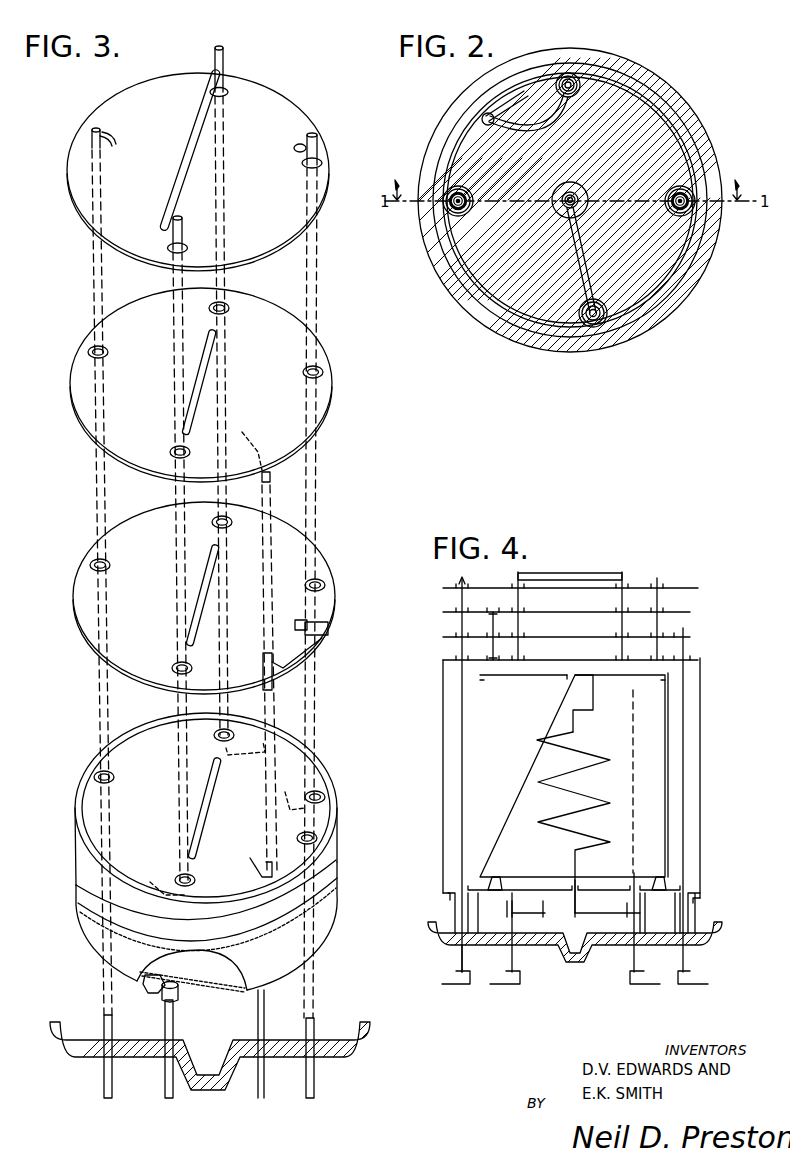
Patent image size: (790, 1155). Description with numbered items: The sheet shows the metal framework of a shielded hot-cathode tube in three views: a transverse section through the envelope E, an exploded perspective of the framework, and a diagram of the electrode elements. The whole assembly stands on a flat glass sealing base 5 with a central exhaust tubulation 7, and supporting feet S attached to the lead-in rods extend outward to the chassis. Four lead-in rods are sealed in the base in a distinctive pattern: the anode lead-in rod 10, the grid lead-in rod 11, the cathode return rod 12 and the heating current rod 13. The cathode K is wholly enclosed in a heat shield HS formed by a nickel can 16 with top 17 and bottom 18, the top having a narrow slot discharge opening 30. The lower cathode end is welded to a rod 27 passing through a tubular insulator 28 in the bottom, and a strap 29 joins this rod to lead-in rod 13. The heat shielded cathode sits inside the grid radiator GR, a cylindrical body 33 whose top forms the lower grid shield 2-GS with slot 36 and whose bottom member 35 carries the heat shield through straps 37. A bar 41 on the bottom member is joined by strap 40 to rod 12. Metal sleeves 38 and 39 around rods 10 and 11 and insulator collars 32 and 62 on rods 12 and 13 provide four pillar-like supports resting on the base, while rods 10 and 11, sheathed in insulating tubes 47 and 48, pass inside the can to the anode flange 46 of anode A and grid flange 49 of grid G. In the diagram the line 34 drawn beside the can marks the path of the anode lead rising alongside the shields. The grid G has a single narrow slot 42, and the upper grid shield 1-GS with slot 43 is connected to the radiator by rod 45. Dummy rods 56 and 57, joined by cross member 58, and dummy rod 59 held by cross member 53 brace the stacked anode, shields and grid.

In FIG. 3, the sealing base 5 is at (210, 1060).
In FIG. 4, the sealing base 5 is at (615, 947).
In FIG. 3, the exhaust tubulation 7 is at (211, 1094).
In FIG. 4, the exhaust tubulation 7 is at (578, 956).
In FIG. 3, the anode lead-in rod 10 is at (90, 136).
In FIG. 2, the anode lead-in rod 10 is at (460, 214).
In FIG. 4, the anode lead-in rod 10 is at (464, 963).
In FIG. 3, the grid lead-in rod 11 is at (329, 626).
In FIG. 2, the grid lead-in rod 11 is at (678, 214).
In FIG. 4, the grid lead-in rod 11 is at (686, 963).
In FIG. 3, the cathode return lead-in rod 12 is at (165, 1083).
In FIG. 2, the cathode return lead-in rod 12 is at (572, 92).
In FIG. 4, the cathode return lead-in rod 12 is at (514, 963).
In FIG. 3, the heating current lead-in rod 13 is at (264, 1084).
In FIG. 2, the heating current lead-in rod 13 is at (600, 305).
In FIG. 4, the heating current lead-in rod 13 is at (645, 703).
In FIG. 4, the heat shield can 16 is at (480, 753).
In FIG. 4, the top of heat shield can 17 is at (503, 679).
In FIG. 4, the bottom of heat shield can 18 is at (543, 886).
In FIG. 2, the cathode connecting rod 27 is at (578, 196).
In FIG. 4, the cathode connecting rod 27 is at (575, 907).
In FIG. 2, the tubular insulator 28 is at (563, 214).
In FIG. 2, the strap 29 is at (588, 262).
In FIG. 4, the strap 29 is at (607, 906).
In FIG. 4, the discharge opening 30 is at (578, 679).
In FIG. 3, the insulator collar 32 is at (174, 1002).
In FIG. 2, the insulator collar 32 is at (580, 88).
In FIG. 4, the insulator collar 32 is at (485, 913).
In FIG. 3, the cylindrical body 33 is at (75, 857).
In FIG. 2, the cylindrical body 33 is at (450, 280).
In FIG. 4, the cylindrical body 33 is at (700, 824).
In FIG. 4, the rod 34 is at (458, 660).
In FIG. 3, the bottom member 35 is at (222, 985).
In FIG. 2, the bottom member 35 is at (482, 258).
In FIG. 4, the bottom member 35 is at (590, 890).
In FIG. 3, the discharge opening 36 is at (216, 808).
In FIG. 4, the discharge opening 36 is at (570, 660).
In FIG. 4, the straps 37 is at (500, 882).
In FIG. 2, the metal sleeve 38 is at (462, 189).
In FIG. 4, the metal sleeve 38 is at (455, 912).
In FIG. 2, the metal sleeve 39 is at (678, 189).
In FIG. 4, the metal sleeve 39 is at (697, 914).
In FIG. 3, the strap 40 is at (150, 980).
In FIG. 2, the strap 40 is at (533, 130).
In FIG. 4, the strap 40 is at (530, 923).
In FIG. 2, the bar 41 is at (510, 105).
In FIG. 4, the bar 41 is at (545, 908).
In FIG. 3, the slot 42 is at (200, 572).
In FIG. 4, the slot 42 is at (570, 637).
In FIG. 3, the slot 43 is at (214, 355).
In FIG. 4, the slot 43 is at (570, 612).
In FIG. 3, the strip or rod 45 is at (274, 470).
In FIG. 4, the strip or rod 45 is at (493, 626).
In FIG. 3, the flange 46 is at (114, 129).
In FIG. 2, the insulating tube 47 is at (470, 196).
In FIG. 2, the tubular insulator 48 is at (667, 196).
In FIG. 3, the flange 49 is at (296, 622).
In FIG. 3, the cross member 53 is at (284, 151).
In FIG. 3, the dummy rod 56 is at (183, 230).
In FIG. 4, the dummy rod 56 is at (518, 606).
In FIG. 3, the dummy rod 57 is at (222, 60).
In FIG. 4, the dummy rod 57 is at (622, 601).
In FIG. 3, the cross member 58 is at (178, 151).
In FIG. 4, the cross member 58 is at (571, 573).
In FIG. 3, the dummy supporting rod 59 is at (318, 151).
In FIG. 4, the dummy supporting rod 59 is at (657, 601).
In FIG. 2, the insulator collar 62 is at (582, 309).
In FIG. 4, the insulator collar 62 is at (648, 910).
In FIG. 3, the anode A is at (80, 213).
In FIG. 4, the anode A is at (641, 586).
In FIG. 3, the grid G is at (322, 565).
In FIG. 4, the grid G is at (690, 637).
In FIG. 3, the upper grid shield 1-GS is at (324, 386).
In FIG. 4, the upper grid shield 1-GS is at (690, 612).
In FIG. 3, the lower grid shield 2-GS is at (318, 789).
In FIG. 4, the lower grid shield 2-GS is at (690, 660).
In FIG. 3, the grid radiator GR is at (330, 892).
In FIG. 4, the grid radiator GR is at (700, 728).
In FIG. 4, the heat shield HS is at (668, 778).
In FIG. 2, the envelope E is at (676, 308).
In FIG. 4, the cathode K is at (583, 790).
In FIG. 4, the supporting feet S is at (460, 983).